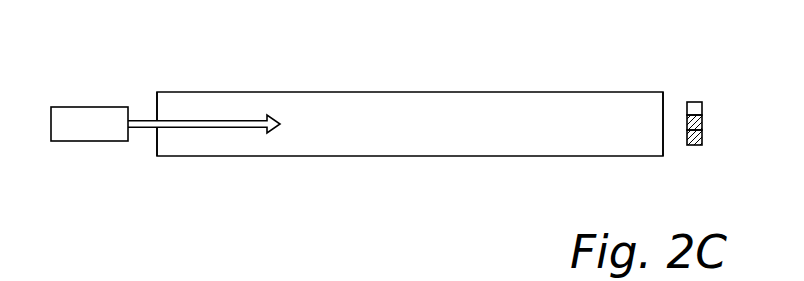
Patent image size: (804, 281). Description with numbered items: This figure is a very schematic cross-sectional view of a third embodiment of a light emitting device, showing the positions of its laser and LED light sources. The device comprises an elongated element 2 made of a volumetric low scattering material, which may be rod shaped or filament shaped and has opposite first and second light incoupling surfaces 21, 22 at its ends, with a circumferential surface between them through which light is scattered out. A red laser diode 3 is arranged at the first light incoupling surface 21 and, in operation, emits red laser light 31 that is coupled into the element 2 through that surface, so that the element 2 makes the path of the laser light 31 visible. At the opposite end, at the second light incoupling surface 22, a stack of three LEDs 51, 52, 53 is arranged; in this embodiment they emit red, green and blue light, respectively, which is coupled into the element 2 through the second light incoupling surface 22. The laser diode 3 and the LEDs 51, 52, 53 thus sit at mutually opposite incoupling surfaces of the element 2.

The element 2 is at (397, 110).
The first light incoupling surface 21 is at (157, 103).
The second light incoupling surface 22 is at (665, 101).
The red laser diode 3 is at (88, 127).
The red laser light 31 is at (215, 120).
The LED 51 is at (702, 108).
The LED 52 is at (702, 123).
The LED 53 is at (692, 146).